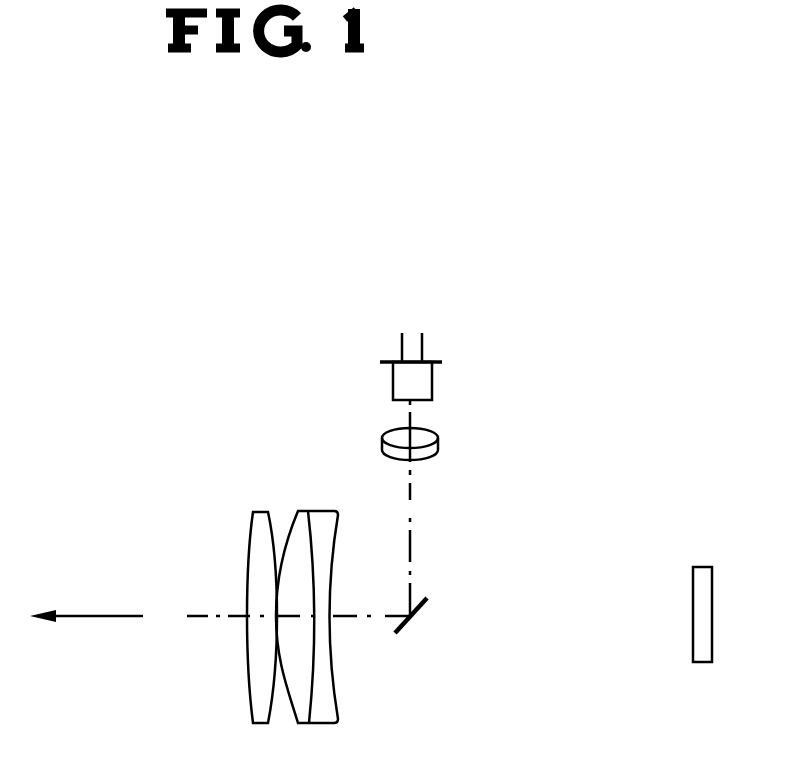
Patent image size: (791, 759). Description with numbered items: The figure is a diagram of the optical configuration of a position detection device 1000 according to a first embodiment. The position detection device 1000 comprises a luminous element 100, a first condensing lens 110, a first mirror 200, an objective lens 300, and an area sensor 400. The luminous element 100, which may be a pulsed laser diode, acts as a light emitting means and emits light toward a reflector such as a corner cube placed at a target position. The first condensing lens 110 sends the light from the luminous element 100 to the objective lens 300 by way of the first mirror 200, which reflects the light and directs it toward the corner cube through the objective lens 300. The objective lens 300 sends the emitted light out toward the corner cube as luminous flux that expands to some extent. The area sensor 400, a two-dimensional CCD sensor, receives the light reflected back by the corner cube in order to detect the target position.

The position detection device 1000 is at (190, 538).
The luminous element 100 is at (437, 382).
The first condensing lens 110 is at (440, 445).
The first mirror 200 is at (435, 607).
The objective lens 300 is at (308, 508).
The area sensor 400 is at (702, 565).